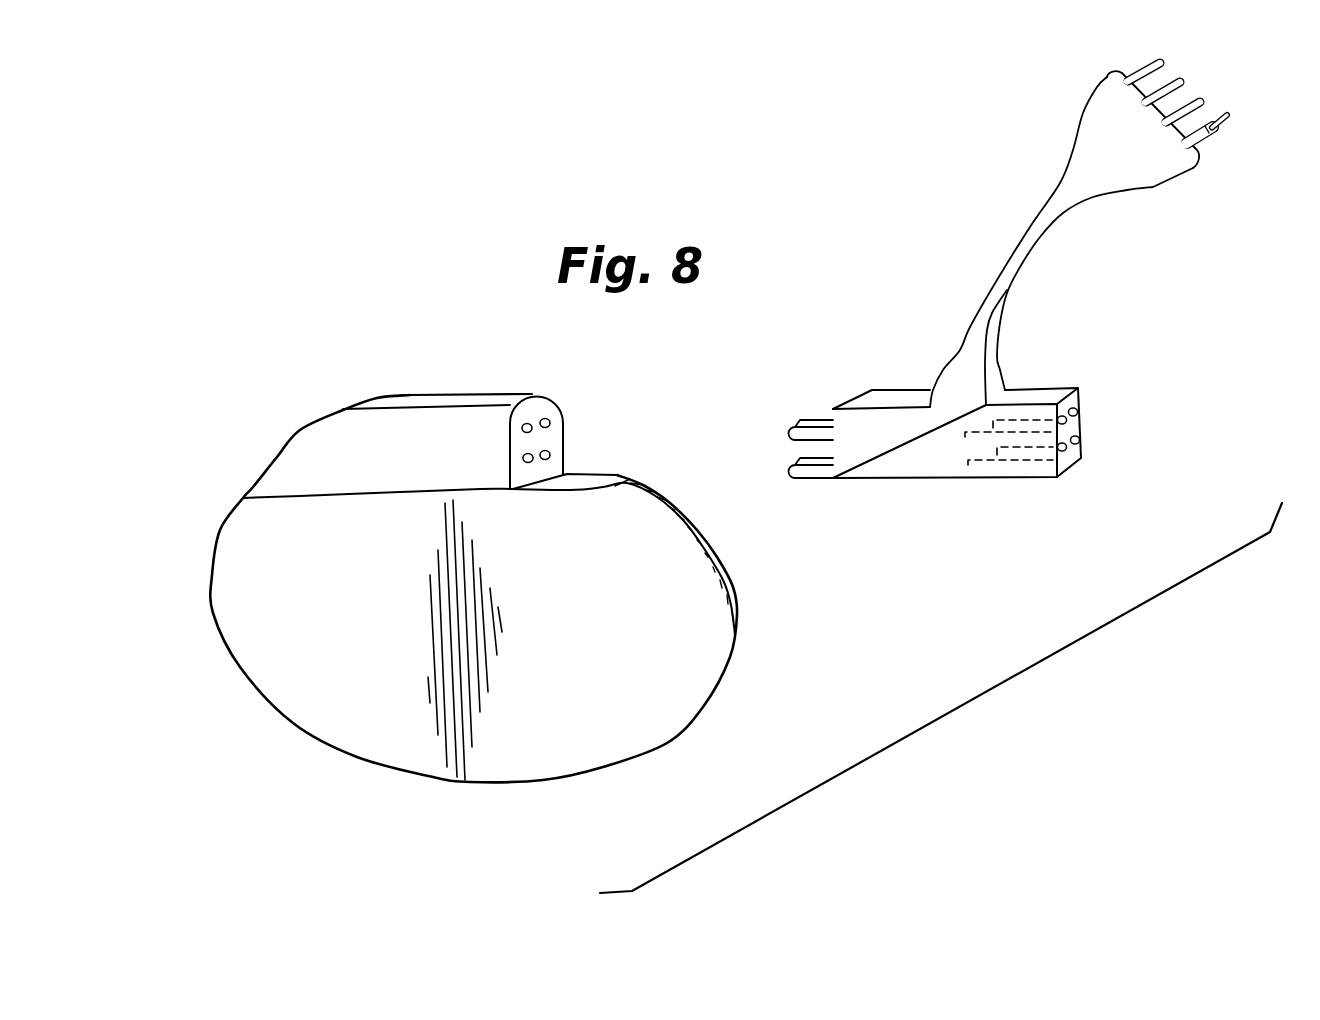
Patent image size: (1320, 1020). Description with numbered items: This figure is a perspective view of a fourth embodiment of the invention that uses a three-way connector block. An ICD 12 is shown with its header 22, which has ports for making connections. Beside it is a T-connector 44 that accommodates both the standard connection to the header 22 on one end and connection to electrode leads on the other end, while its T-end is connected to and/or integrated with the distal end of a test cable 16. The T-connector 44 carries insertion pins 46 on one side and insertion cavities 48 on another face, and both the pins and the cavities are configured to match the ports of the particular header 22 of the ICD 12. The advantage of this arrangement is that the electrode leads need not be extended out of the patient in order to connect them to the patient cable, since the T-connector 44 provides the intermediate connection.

The ICD 12 is at (543, 780).
The test cable 16 is at (1144, 172).
The header 22 is at (357, 403).
The T-connector 44 is at (950, 478).
The insertion pins 46 is at (805, 472).
The insertion cavities 48 is at (1078, 440).